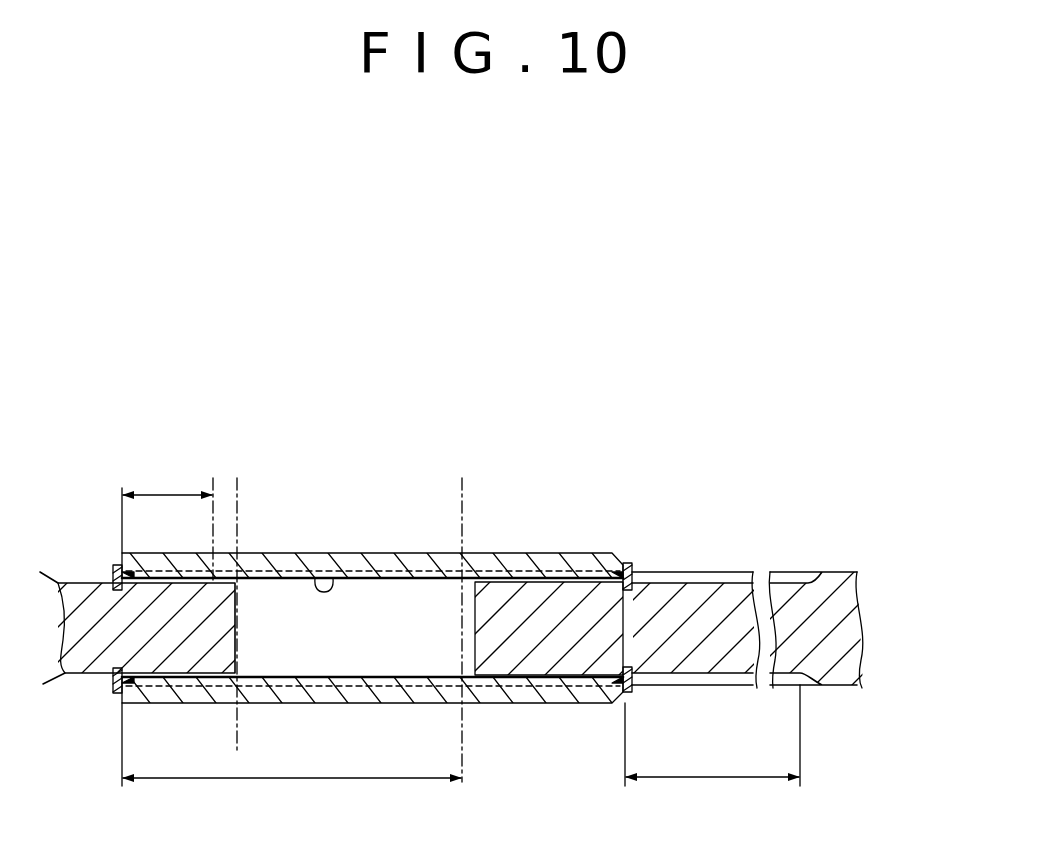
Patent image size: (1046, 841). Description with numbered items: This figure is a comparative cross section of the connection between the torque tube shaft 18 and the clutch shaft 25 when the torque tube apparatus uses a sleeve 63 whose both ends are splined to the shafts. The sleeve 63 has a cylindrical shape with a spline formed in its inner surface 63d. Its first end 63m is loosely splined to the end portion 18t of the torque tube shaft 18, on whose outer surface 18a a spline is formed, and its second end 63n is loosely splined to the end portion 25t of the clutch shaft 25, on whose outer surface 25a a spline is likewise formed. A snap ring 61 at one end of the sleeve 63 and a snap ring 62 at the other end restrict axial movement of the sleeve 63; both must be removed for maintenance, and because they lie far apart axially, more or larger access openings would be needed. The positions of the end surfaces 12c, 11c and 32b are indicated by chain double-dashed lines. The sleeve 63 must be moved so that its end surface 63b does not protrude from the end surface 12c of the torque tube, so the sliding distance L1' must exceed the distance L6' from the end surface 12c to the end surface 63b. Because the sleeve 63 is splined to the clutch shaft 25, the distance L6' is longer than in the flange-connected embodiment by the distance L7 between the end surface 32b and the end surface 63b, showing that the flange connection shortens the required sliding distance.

The clutch shaft 25 is at (58, 676).
The outer surface 25a is at (150, 680).
The end portion 25t is at (222, 630).
The torque tube shaft 18 is at (712, 600).
The outer surface 18a is at (743, 688).
The end portion 18t is at (503, 635).
The snap ring 61 is at (636, 568).
The snap ring 62 is at (113, 575).
The sleeve 63 is at (398, 560).
The end surface 63b is at (120, 700).
The inner surface 63d is at (325, 585).
The first end 63m is at (598, 563).
The second end 63n is at (140, 553).
The end surface 32b is at (213, 487).
The end surface 11c is at (237, 492).
The end surface 12c is at (462, 487).
The distance L7 is at (167, 506).
The distance L6' is at (291, 744).
The distance L1' is at (712, 735).